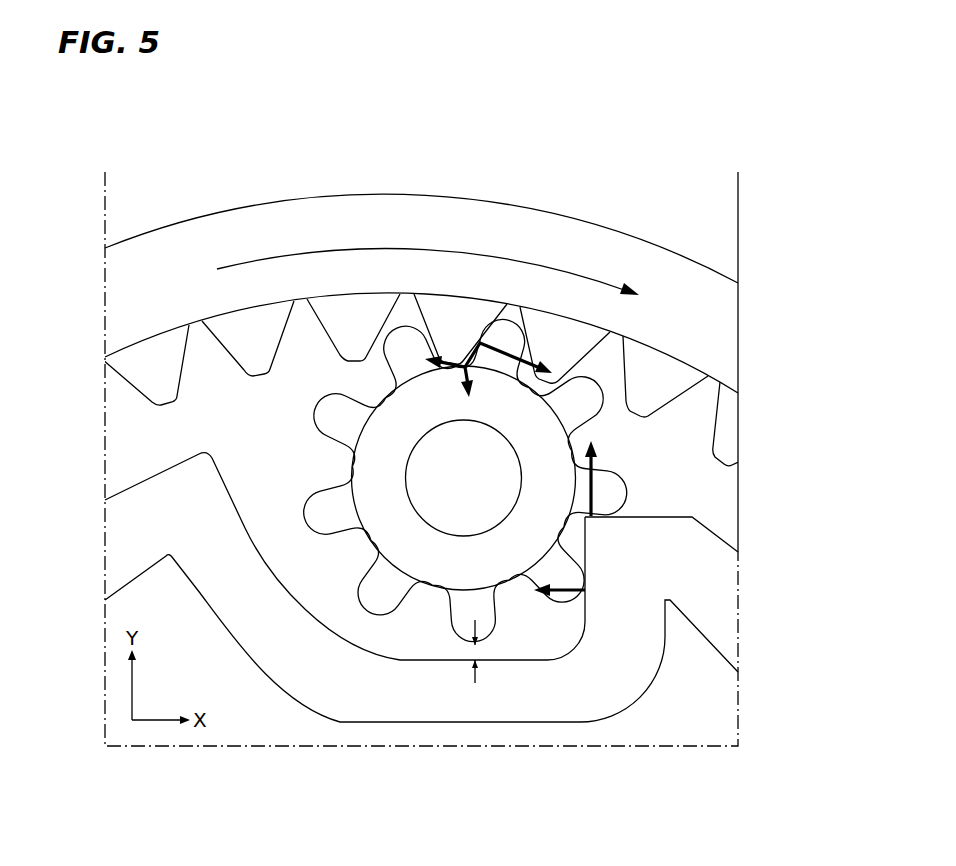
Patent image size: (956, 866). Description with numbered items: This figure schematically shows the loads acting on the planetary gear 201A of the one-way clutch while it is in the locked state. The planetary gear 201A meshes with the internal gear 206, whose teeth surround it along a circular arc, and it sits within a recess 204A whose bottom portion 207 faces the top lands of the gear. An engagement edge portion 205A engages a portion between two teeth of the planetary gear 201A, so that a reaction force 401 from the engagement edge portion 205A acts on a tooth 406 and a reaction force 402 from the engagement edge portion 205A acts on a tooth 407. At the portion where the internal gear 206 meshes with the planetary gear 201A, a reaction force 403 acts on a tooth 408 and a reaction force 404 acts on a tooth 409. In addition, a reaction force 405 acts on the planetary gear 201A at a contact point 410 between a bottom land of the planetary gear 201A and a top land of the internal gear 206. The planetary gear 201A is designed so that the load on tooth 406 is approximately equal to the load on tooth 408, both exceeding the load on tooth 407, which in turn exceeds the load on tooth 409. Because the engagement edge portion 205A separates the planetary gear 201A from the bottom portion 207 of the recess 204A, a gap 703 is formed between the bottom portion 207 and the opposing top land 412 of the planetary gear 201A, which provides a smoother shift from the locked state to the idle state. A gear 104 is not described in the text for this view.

The internal gear 104 is at (421, 305).
The planetary gear 201A is at (559, 473).
The internal gear 206 is at (147, 378).
The bottom portion 207 is at (464, 645).
The recess 204A is at (570, 643).
The engagement edge portion 205A is at (585, 520).
The reaction force 401 is at (694, 434).
The reaction force 402 is at (585, 575).
The reaction force 403 is at (522, 366).
The reaction force 404 is at (402, 348).
The reaction force 405 is at (465, 370).
The tooth 406 is at (617, 495).
The tooth 407 is at (653, 667).
The tooth 408 is at (502, 338).
The tooth 409 is at (388, 338).
The contact point 410 is at (453, 363).
The top land 412 is at (474, 618).
The gap 703 is at (468, 652).